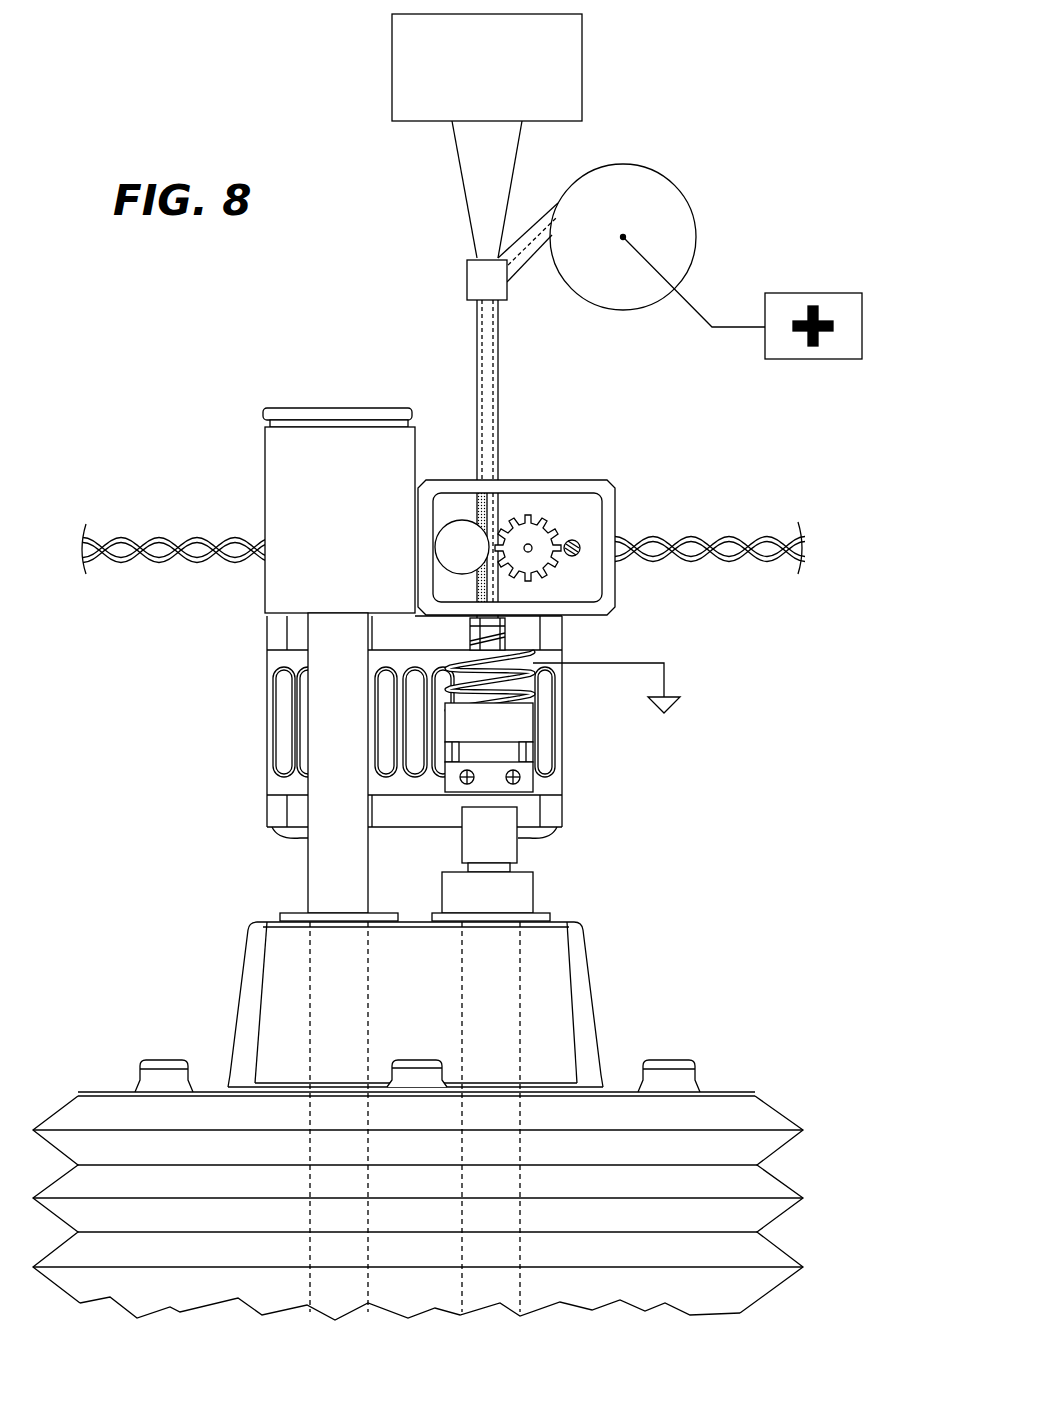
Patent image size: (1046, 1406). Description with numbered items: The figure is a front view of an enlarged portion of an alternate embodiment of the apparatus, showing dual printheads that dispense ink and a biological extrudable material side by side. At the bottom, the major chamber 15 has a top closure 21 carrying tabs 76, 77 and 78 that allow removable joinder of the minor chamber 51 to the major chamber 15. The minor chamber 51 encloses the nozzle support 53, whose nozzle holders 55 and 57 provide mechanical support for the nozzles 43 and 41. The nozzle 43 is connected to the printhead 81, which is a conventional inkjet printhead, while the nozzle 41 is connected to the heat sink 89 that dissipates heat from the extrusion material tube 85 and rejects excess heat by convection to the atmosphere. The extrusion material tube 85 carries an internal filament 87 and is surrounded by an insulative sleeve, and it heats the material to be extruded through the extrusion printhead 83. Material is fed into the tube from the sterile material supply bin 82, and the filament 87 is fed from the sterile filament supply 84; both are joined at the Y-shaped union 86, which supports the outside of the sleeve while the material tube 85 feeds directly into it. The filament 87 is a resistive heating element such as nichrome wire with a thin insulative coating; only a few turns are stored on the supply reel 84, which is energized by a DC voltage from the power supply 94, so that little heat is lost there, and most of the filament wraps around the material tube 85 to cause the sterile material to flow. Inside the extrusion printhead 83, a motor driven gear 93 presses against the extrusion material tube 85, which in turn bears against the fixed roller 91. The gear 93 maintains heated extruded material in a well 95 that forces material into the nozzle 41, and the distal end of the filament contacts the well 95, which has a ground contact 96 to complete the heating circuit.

The major chamber 15 is at (765, 1107).
The top closure 21 is at (97, 1088).
The nozzle 41 is at (515, 866).
The nozzle 43 is at (315, 878).
The minor chamber 51 is at (582, 1010).
The nozzle support 53 is at (550, 985).
The nozzle holder 55 is at (293, 912).
The nozzle holder 57 is at (542, 912).
The tab 76 is at (163, 1077).
The tab 77 is at (400, 1073).
The tab 78 is at (663, 1070).
The printhead 81 is at (272, 487).
The sterile material supply bin 82 is at (582, 58).
The extrusion printhead 83 is at (590, 480).
The sterile filament supply 84 is at (623, 163).
The extrusion material tube 85 is at (497, 510).
The union 86 is at (507, 287).
The filament 87 is at (510, 380).
The heat sink 89 is at (565, 722).
The fixed roller 91 is at (463, 520).
The motor driven gear 93 is at (528, 512).
The power supply 94 is at (807, 293).
The well 95 is at (505, 695).
The ground contact 96 is at (668, 702).